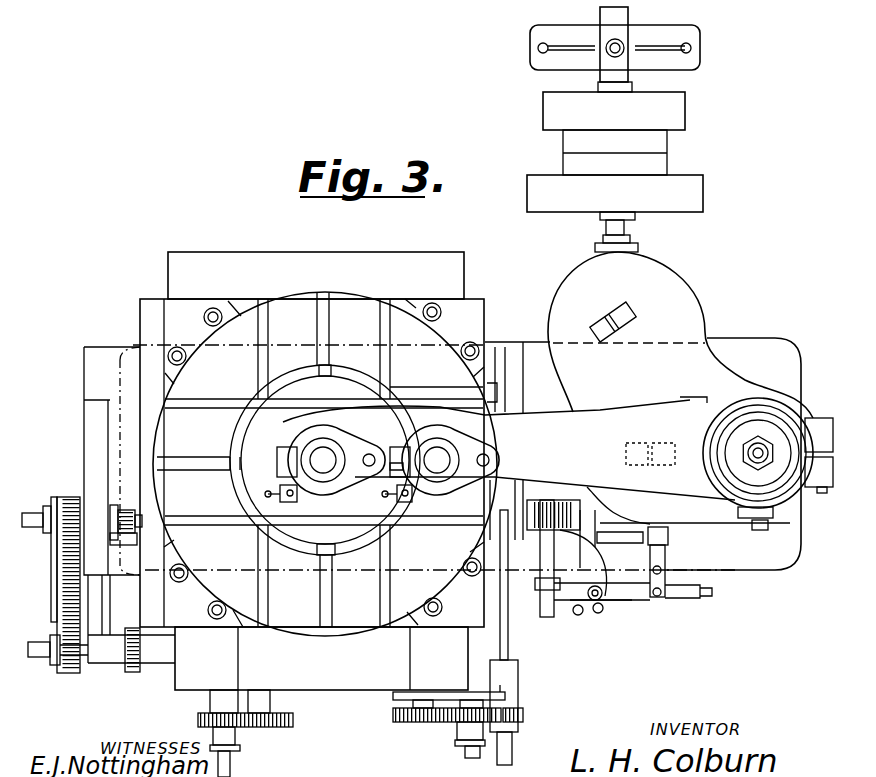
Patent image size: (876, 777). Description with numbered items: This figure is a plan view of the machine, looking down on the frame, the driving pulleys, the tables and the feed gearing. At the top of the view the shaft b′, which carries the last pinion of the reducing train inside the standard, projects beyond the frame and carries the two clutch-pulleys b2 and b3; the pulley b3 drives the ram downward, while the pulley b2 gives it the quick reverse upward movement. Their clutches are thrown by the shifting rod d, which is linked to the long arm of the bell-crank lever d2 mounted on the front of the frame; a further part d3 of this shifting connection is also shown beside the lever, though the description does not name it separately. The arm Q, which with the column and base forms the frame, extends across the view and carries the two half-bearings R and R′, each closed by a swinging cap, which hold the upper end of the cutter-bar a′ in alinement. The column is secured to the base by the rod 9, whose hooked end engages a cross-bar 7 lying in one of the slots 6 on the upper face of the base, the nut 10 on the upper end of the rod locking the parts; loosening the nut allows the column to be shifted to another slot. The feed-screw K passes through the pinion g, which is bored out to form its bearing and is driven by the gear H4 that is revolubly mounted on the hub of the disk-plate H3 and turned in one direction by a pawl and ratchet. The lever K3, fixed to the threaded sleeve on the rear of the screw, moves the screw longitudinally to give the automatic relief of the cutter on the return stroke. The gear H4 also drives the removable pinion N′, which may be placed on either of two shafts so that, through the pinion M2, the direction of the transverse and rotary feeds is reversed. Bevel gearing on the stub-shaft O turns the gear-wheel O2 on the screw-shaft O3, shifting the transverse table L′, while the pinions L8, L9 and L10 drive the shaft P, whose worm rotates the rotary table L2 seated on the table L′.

The clutch-pulley b2 is at (543, 106).
The clutch-pulley b3 is at (703, 190).
The shaft b′ is at (624, 229).
The cross-bar 7 is at (612, 318).
The slot 6 is at (637, 310).
The cutter-bar a′ is at (317, 455).
The front bearing R is at (344, 440).
The front bearing R′ is at (470, 441).
The arm Q is at (509, 450).
The lever K3 is at (582, 480).
The rod 9 is at (768, 458).
The nut 10 is at (757, 445).
The transverse table L′ is at (185, 608).
The rotary table L2 is at (358, 589).
The shifting rod d is at (667, 554).
The bell-crank lever d2 is at (638, 604).
The lever d3 is at (574, 612).
The shaft P is at (509, 651).
The pinion L8 is at (415, 724).
The pinion L9 is at (460, 726).
The pinion L10 is at (525, 714).
The gear-wheel O2 is at (199, 717).
The stub-shaft O is at (252, 729).
The screw-shaft O3 is at (234, 763).
The feed-screw K is at (33, 511).
The pinion g is at (74, 497).
The disk-plate H3 is at (57, 565).
The gear H4 is at (57, 590).
The pinion N′ is at (70, 672).
The pinion M2 is at (133, 673).